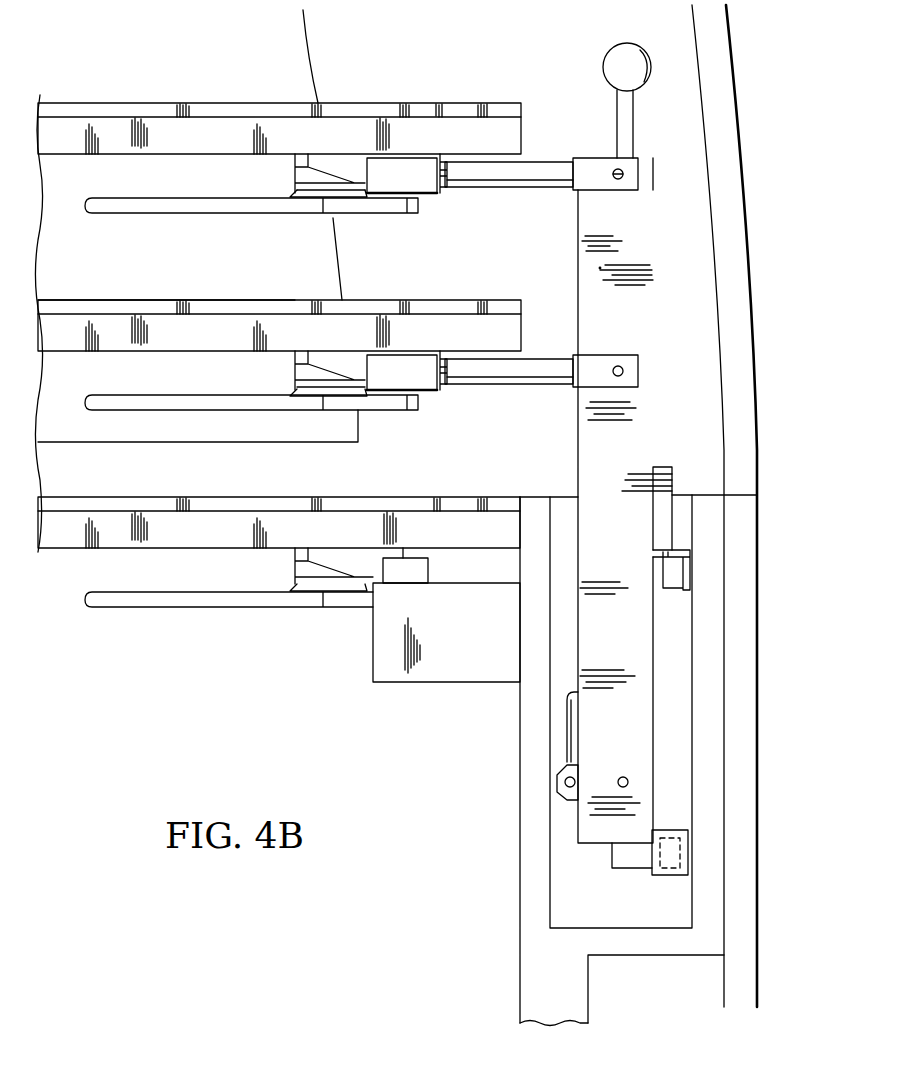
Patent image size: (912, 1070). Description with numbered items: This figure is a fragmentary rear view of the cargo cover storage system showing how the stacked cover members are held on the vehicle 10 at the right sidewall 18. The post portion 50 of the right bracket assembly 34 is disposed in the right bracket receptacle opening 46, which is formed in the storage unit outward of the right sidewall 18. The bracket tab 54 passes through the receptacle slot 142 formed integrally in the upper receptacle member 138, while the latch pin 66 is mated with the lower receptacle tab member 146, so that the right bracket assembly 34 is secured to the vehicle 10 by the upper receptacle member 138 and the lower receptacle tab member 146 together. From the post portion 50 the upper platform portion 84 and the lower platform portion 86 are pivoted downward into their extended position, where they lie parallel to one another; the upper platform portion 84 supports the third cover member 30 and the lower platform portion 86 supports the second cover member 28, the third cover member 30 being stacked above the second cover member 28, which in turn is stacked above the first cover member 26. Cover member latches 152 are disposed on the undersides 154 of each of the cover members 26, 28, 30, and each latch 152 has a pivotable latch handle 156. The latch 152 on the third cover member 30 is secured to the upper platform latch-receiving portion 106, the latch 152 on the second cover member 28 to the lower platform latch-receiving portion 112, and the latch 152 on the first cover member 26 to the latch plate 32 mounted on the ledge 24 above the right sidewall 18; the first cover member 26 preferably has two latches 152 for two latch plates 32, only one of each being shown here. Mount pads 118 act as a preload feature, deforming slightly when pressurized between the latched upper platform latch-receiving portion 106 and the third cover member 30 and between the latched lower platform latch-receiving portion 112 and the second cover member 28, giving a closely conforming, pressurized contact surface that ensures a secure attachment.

The vehicle 10 is at (728, 157).
The right sidewall 18 is at (520, 795).
The ledge 24 is at (455, 586).
The first cover member 26 is at (238, 497).
The second cover member 28 is at (238, 300).
The third cover member 30 is at (221, 103).
The latch plate 32 is at (418, 570).
The right bracket assembly 34 is at (632, 288).
The right bracket receptacle opening 46 is at (678, 505).
The post portion 50 is at (627, 448).
The bracket tab 54 is at (667, 585).
The latch pin 66 is at (612, 858).
The upper platform portion 84 is at (540, 166).
The lower platform portion 86 is at (522, 368).
The upper platform latch-receiving portion 106 is at (415, 178).
The lower platform latch-receiving portion 112 is at (415, 372).
The mount pad 118 is at (398, 178).
The upper receptacle member 138 is at (687, 552).
The receptacle slot 142 is at (675, 538).
The lower receptacle tab member 146 is at (683, 830).
The cover member latch 152 is at (356, 172).
The underside 154 is at (470, 172).
The pivotable latch handle 156 is at (379, 214).